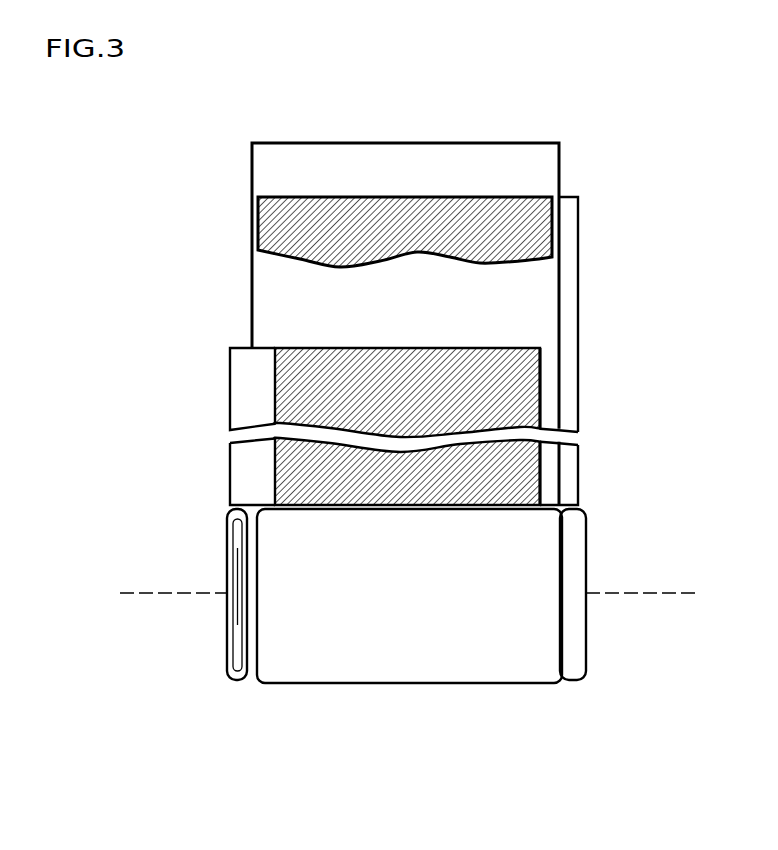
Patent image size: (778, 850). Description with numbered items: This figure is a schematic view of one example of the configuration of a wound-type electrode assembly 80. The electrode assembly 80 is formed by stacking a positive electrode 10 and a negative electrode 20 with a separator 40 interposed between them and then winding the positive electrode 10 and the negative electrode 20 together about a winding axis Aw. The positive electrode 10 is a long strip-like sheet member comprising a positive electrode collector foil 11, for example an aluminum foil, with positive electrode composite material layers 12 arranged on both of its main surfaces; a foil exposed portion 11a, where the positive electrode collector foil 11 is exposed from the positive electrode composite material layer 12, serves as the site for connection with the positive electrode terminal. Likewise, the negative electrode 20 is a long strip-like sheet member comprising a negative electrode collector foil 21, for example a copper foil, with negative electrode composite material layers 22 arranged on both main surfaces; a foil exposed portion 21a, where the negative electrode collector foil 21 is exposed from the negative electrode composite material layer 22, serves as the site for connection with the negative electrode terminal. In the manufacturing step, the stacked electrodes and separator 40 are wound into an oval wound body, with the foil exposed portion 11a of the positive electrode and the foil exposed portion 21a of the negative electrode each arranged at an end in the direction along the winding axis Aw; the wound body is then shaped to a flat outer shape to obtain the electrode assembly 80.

The positive electrode 10 is at (336, 385).
The positive electrode collector foil 11 is at (246, 346).
The foil exposed portion 11a is at (250, 650).
The positive electrode composite material layer 12 is at (296, 345).
The negative electrode 20 is at (468, 313).
The negative electrode collector foil 21 is at (588, 336).
The foil exposed portion 21a is at (572, 648).
The negative electrode composite material layer 22 is at (519, 197).
The separator 40 is at (317, 143).
The electrode assembly 80 is at (446, 664).
The winding axis Aw is at (655, 595).